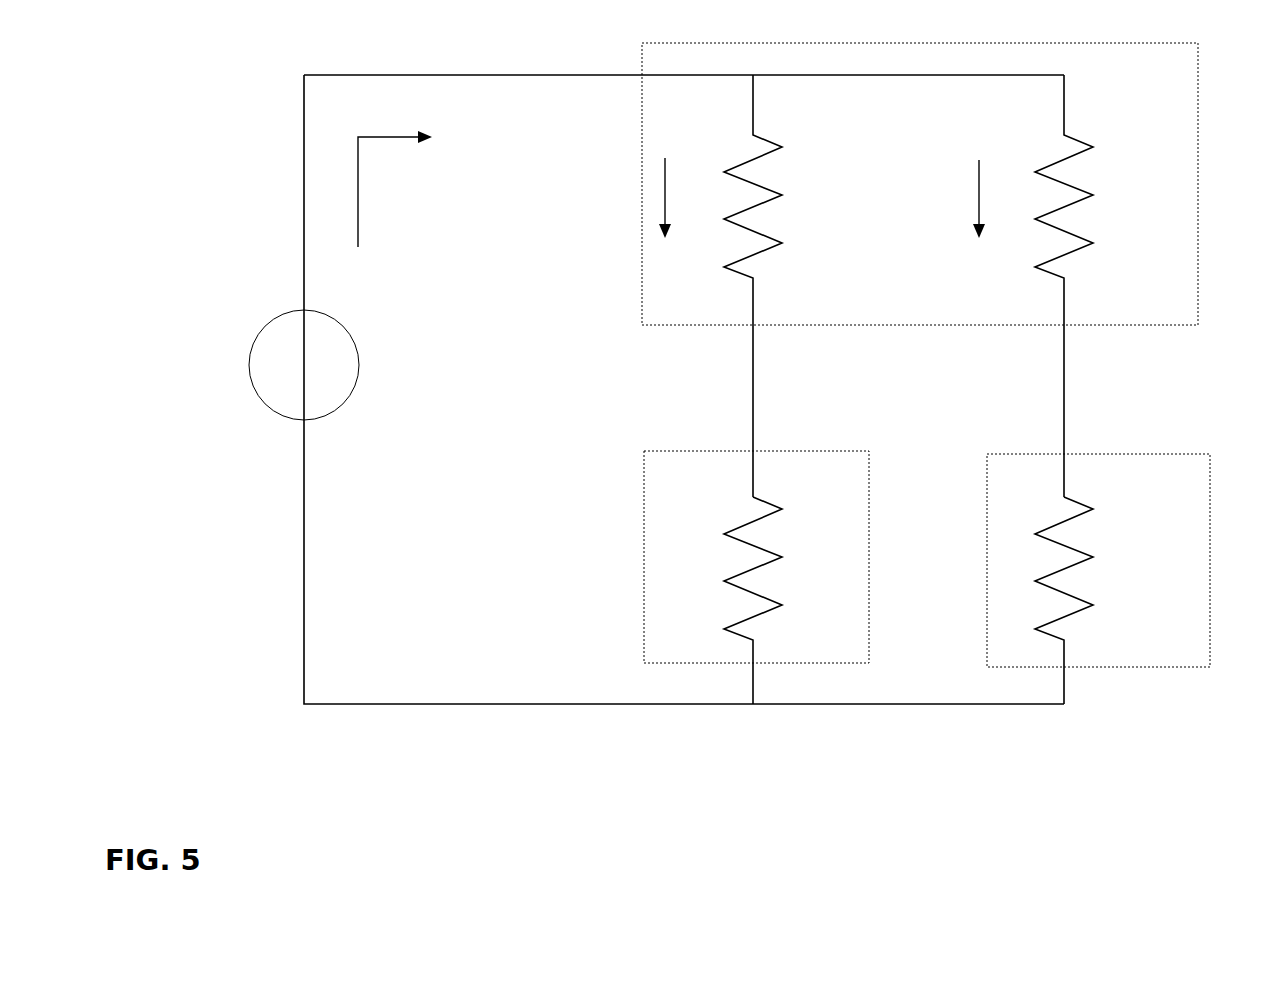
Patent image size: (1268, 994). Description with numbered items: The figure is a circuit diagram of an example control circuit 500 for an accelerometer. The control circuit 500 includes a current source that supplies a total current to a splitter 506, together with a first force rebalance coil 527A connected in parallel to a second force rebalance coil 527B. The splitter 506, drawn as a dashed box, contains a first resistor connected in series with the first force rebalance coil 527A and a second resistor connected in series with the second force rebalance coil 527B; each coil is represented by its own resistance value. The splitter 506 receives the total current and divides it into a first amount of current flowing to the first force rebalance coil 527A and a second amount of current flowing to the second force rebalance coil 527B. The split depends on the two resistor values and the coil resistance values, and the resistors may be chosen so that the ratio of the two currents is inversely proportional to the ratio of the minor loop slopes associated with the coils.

The control circuit 500 is at (192, 76).
The splitter 506 is at (1199, 108).
The first force rebalance coil 527A is at (793, 447).
The second force rebalance coil 527B is at (1136, 451).